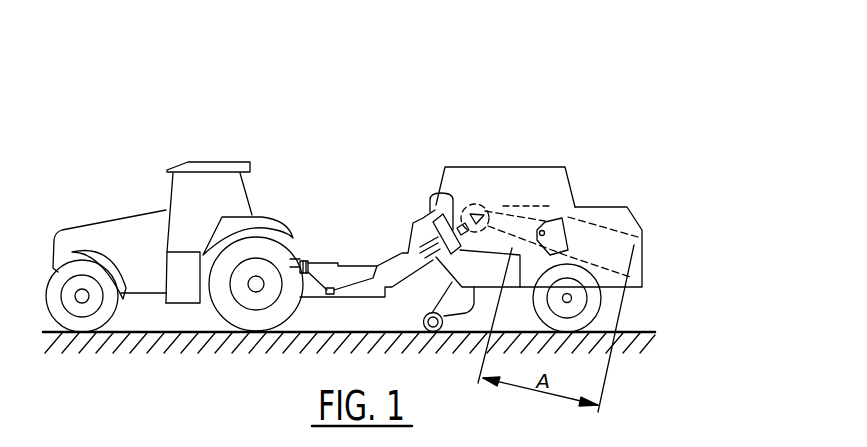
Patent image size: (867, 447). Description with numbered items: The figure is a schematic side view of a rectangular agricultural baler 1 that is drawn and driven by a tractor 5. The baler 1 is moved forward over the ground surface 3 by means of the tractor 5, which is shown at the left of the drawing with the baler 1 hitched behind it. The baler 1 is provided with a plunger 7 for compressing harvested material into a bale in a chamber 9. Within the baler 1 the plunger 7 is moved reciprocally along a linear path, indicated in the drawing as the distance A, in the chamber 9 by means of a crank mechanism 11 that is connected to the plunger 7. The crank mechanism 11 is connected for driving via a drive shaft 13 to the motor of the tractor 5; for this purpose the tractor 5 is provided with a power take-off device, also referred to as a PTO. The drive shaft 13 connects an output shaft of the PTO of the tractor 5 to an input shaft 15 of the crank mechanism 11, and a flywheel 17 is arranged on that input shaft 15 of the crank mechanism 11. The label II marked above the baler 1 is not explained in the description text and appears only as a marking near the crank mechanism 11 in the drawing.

The rectangular agricultural baler 1 is at (653, 163).
The ground surface 3 is at (633, 331).
The tractor 5 is at (133, 238).
The plunger 7 is at (560, 217).
The chamber 9 is at (592, 247).
The crank mechanism 11 is at (485, 167).
The position II is at (533, 166).
The drive shaft 13 is at (353, 265).
The input shaft 15 is at (454, 207).
The flywheel 17 is at (431, 260).